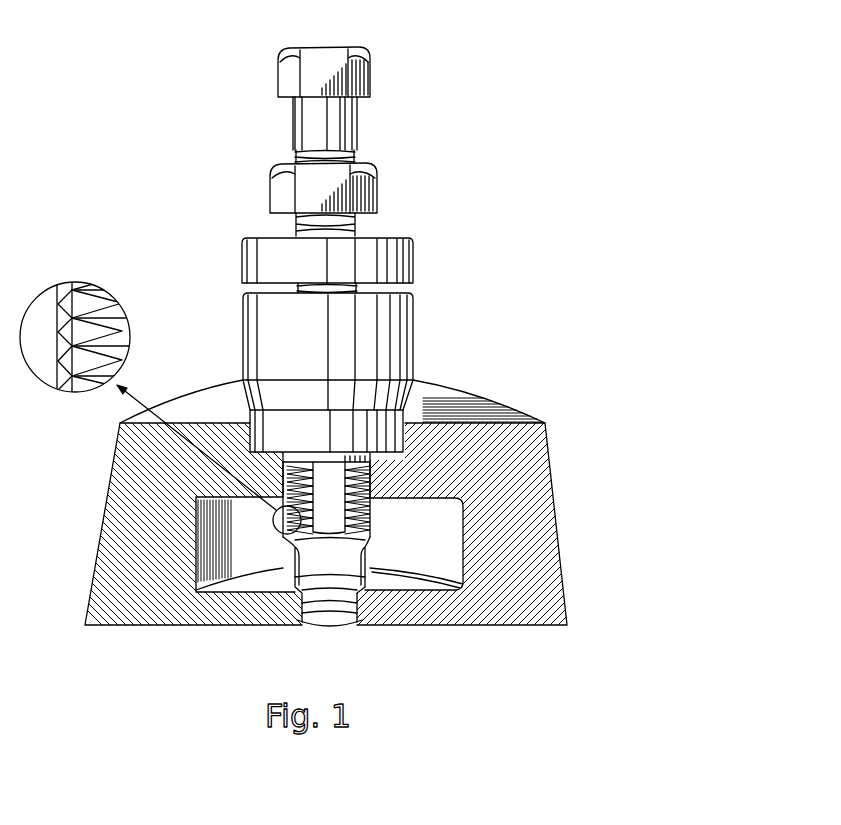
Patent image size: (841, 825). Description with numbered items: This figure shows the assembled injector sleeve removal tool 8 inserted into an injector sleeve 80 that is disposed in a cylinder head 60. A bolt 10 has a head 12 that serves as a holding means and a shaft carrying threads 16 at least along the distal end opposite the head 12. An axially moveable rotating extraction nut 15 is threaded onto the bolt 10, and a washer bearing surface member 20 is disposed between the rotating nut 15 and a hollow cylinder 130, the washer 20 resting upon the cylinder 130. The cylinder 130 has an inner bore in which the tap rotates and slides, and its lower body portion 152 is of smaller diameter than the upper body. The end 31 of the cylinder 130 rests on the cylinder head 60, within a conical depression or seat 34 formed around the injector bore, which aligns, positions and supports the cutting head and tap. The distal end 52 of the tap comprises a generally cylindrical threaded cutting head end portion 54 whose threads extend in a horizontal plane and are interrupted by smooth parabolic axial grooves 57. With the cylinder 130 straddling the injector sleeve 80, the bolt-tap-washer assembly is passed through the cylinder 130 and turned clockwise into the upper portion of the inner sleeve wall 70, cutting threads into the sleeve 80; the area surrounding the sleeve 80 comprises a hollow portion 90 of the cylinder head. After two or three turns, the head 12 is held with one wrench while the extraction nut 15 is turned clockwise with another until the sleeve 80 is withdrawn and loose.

The assembled tool 8 is at (570, 257).
The bolt 10 is at (348, 125).
The head 12 is at (370, 67).
The rotating extraction nut 15 is at (373, 190).
The threads 16 is at (352, 158).
The washer bearing surface member 20 is at (365, 262).
The end of the cylinder 31 is at (262, 452).
The conical depression or seat 34 is at (260, 448).
The distal end of the tap 52 is at (300, 595).
The threaded cutting head end portion 54 is at (500, 413).
The smooth parabolic axial grooves 57 is at (330, 480).
The cylinder head 60 is at (187, 415).
The inner sleeve wall 70 is at (371, 507).
The injector sleeve 80 is at (318, 603).
The hollow portion 90 is at (225, 553).
The hollow cylinder or sleeve 130 is at (383, 337).
The lower body portion 152 is at (360, 470).